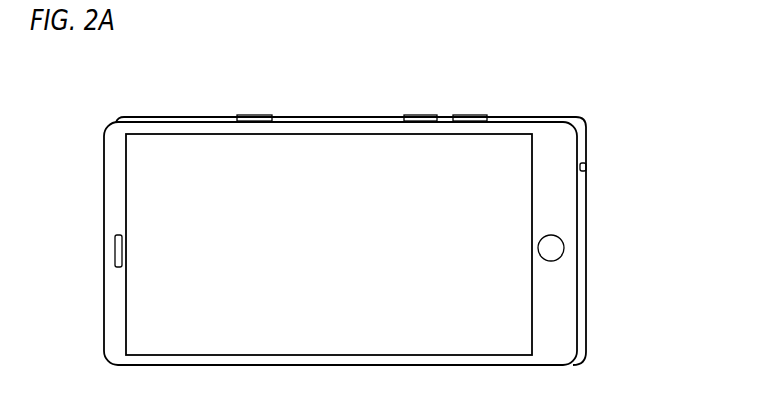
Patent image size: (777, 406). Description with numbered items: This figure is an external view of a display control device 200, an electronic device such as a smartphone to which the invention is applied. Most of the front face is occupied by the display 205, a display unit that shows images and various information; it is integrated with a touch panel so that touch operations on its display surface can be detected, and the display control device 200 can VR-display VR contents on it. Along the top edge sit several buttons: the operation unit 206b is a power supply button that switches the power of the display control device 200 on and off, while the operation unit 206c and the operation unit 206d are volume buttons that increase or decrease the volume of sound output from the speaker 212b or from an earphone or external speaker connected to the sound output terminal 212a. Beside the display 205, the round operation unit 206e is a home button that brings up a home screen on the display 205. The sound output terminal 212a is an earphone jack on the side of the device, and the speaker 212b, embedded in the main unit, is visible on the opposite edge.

The display control device 200 is at (555, 323).
The display 205 is at (187, 148).
The operation unit 206b is at (245, 114).
The operation unit 206c is at (413, 114).
The operation unit 206d is at (478, 114).
The operation unit 206e is at (551, 248).
The sound output terminal 212a is at (585, 167).
The speaker 212b is at (115, 247).